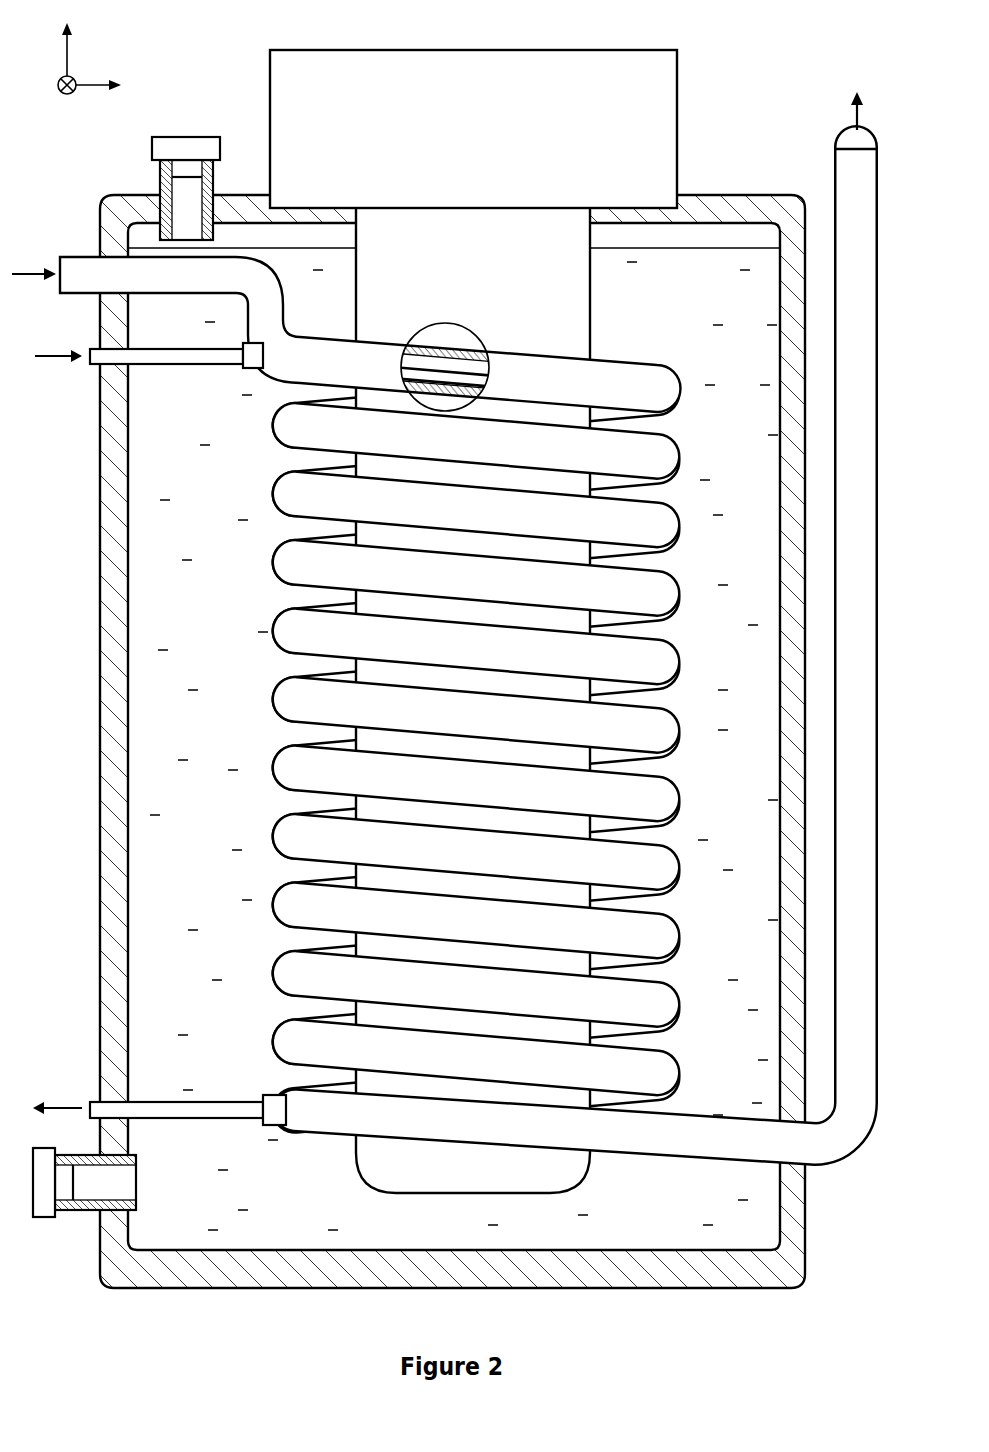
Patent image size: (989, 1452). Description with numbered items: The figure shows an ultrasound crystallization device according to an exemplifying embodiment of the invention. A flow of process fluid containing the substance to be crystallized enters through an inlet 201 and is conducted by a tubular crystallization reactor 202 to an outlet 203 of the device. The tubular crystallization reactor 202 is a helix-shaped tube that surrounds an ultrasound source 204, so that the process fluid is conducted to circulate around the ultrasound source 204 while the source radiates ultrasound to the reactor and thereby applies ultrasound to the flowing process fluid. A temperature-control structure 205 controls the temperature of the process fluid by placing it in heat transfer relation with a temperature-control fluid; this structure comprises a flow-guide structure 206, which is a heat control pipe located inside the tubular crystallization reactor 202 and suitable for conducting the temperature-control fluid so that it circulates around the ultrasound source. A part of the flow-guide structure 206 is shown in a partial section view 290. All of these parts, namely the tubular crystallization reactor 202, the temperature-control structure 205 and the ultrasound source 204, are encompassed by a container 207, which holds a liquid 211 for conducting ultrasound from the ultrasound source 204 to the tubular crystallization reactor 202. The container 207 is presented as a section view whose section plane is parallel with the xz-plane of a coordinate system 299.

The coordinate system 299 is at (121, 67).
The inlet 201 is at (86, 257).
The tubular crystallization reactor 202 is at (634, 360).
The outlet 203 is at (838, 168).
The ultrasound source 204 is at (489, 259).
The temperature-control structure 205 is at (223, 367).
The flow-guide structure 206 is at (467, 366).
The container 207 is at (99, 650).
The liquid 211 is at (743, 612).
The partial section view 290 is at (447, 323).